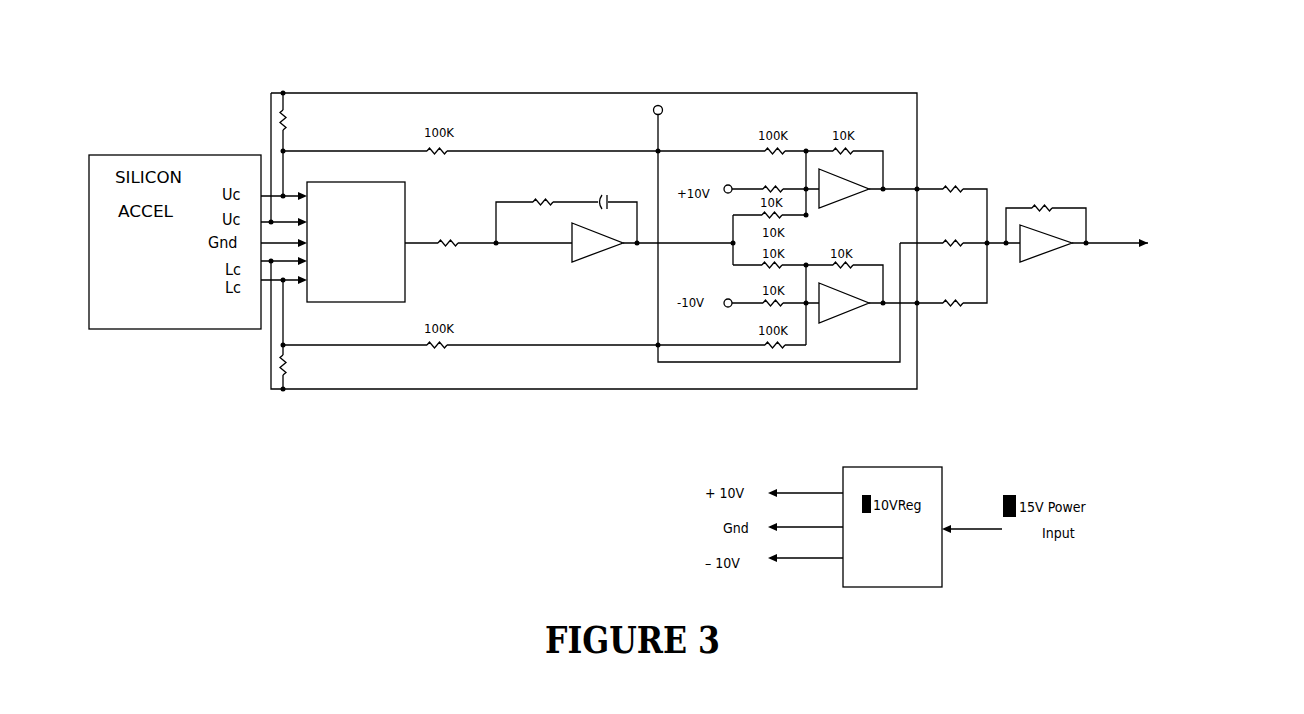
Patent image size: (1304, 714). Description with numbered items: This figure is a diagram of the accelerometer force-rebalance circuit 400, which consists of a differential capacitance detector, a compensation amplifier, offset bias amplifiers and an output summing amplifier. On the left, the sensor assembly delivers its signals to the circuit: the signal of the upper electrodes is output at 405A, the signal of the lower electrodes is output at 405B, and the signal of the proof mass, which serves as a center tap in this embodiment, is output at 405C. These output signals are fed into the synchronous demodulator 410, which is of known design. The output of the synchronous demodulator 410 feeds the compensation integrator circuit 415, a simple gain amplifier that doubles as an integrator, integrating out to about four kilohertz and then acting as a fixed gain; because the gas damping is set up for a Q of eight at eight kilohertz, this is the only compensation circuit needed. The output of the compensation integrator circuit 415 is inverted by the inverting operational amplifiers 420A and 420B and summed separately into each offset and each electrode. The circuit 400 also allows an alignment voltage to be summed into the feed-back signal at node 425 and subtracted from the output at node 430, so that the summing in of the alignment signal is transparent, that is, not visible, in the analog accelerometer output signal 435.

The accelerometer force-rebalance circuit 400 is at (1113, 130).
The upper electrode signal output 405A is at (267, 196).
The lower electrode signal output 405B is at (268, 280).
The proof mass signal output 405C is at (202, 243).
The synchronous demodulator 410 is at (367, 182).
The compensation integrator circuit 415 is at (548, 325).
The inverting operational amplifier 420A is at (857, 182).
The inverting operational amplifier 420B is at (848, 315).
The node 425 is at (664, 110).
The node 430 is at (902, 237).
The analog accelerometer output signal 435 is at (1155, 243).